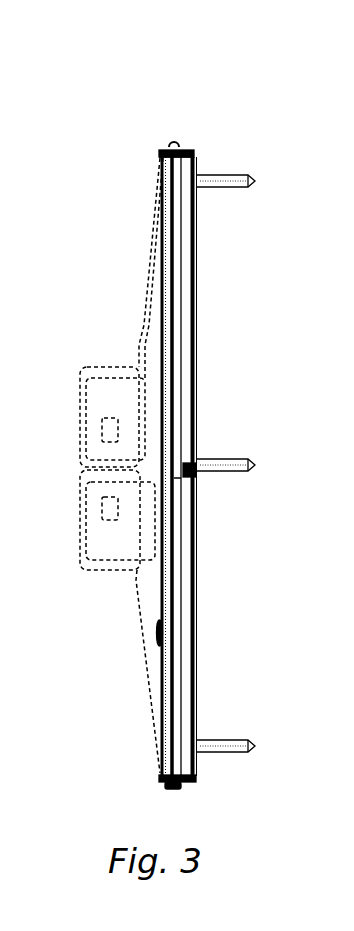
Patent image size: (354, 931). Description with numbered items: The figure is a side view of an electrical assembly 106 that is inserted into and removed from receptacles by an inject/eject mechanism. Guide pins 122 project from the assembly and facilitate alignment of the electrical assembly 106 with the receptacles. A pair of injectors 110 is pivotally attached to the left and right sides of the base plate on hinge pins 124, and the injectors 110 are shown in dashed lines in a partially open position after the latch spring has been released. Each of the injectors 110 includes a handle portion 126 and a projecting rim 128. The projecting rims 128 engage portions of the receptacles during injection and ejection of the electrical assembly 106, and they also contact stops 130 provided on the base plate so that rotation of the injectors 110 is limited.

The electrical assembly 106 is at (131, 93).
The injectors 110 is at (155, 333).
The guide pins 122 is at (236, 466).
The hinge pins 124 is at (195, 163).
The handle portions 126 is at (98, 404).
The projecting rims 128 is at (183, 652).
The stops 130 is at (197, 292).